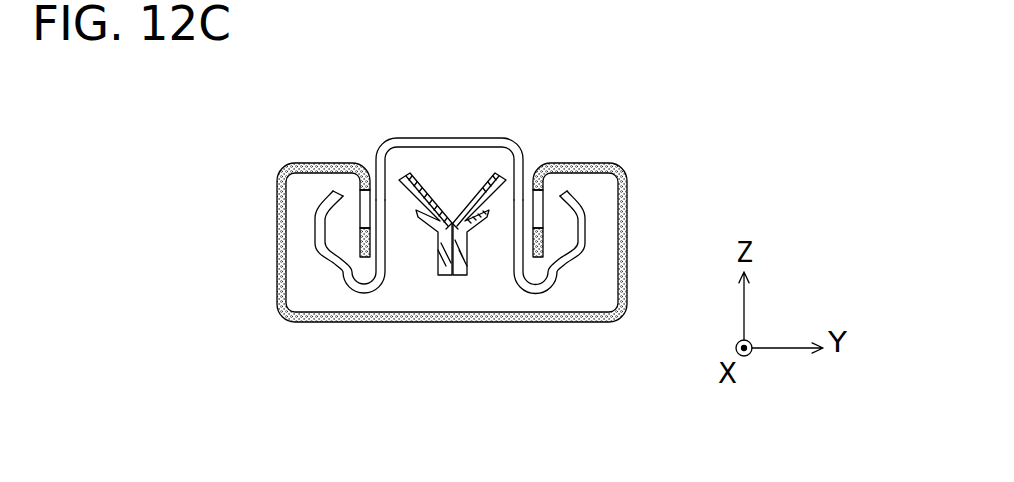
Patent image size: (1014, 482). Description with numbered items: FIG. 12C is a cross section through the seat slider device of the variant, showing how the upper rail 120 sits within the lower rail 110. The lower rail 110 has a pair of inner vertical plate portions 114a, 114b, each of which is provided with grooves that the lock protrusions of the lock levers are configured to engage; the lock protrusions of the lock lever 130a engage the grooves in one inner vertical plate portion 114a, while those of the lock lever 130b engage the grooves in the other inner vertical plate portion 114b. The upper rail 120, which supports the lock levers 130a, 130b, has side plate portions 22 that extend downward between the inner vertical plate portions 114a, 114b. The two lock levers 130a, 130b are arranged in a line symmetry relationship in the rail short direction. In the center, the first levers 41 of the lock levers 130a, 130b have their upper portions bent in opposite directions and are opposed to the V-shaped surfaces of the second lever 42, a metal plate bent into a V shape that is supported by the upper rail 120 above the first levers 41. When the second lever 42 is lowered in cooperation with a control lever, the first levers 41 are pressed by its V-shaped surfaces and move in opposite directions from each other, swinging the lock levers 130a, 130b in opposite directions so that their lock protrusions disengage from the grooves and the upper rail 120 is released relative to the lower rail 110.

The lower rail 110 is at (631, 154).
The upper rail 120 is at (501, 115).
The side plate portion 22 is at (389, 254).
The inner vertical plate portion 114a is at (358, 244).
The inner vertical plate portion 114b is at (544, 246).
The first lever 41 is at (372, 249).
The lock lever 130a is at (416, 211).
The lock lever 130b is at (460, 277).
The second lever 42 is at (465, 203).